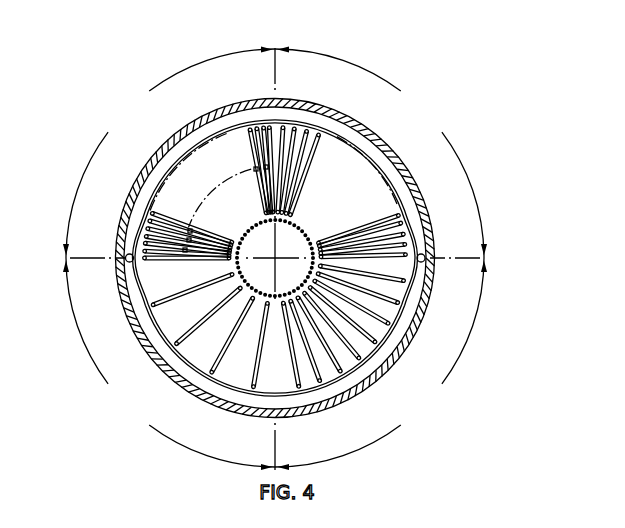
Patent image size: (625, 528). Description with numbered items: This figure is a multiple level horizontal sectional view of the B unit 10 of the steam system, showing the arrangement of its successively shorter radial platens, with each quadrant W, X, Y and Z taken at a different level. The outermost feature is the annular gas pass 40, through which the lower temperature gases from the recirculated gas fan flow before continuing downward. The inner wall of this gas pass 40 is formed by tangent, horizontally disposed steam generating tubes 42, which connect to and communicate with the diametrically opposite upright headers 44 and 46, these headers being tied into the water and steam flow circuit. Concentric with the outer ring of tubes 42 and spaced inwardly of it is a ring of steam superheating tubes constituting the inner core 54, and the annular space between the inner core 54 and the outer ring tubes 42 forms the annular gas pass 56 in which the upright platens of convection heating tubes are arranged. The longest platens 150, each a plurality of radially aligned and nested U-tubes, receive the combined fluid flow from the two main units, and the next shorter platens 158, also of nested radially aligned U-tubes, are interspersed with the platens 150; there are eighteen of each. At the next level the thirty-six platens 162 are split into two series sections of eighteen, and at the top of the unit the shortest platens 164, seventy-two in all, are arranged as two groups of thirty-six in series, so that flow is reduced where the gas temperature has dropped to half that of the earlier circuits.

The apparatus 10 is at (136, 348).
The annular gas pass 40 is at (150, 190).
The steam generating tubes 42 is at (142, 225).
The upright header 44 is at (143, 262).
The upright header 46 is at (426, 259).
The inner core 54 is at (300, 223).
The annular gas pass 56 is at (217, 212).
The longest platens 150 is at (336, 232).
The next shorter platens 158 is at (411, 221).
The platens 162 is at (401, 214).
The shortest platens 164 is at (265, 151).